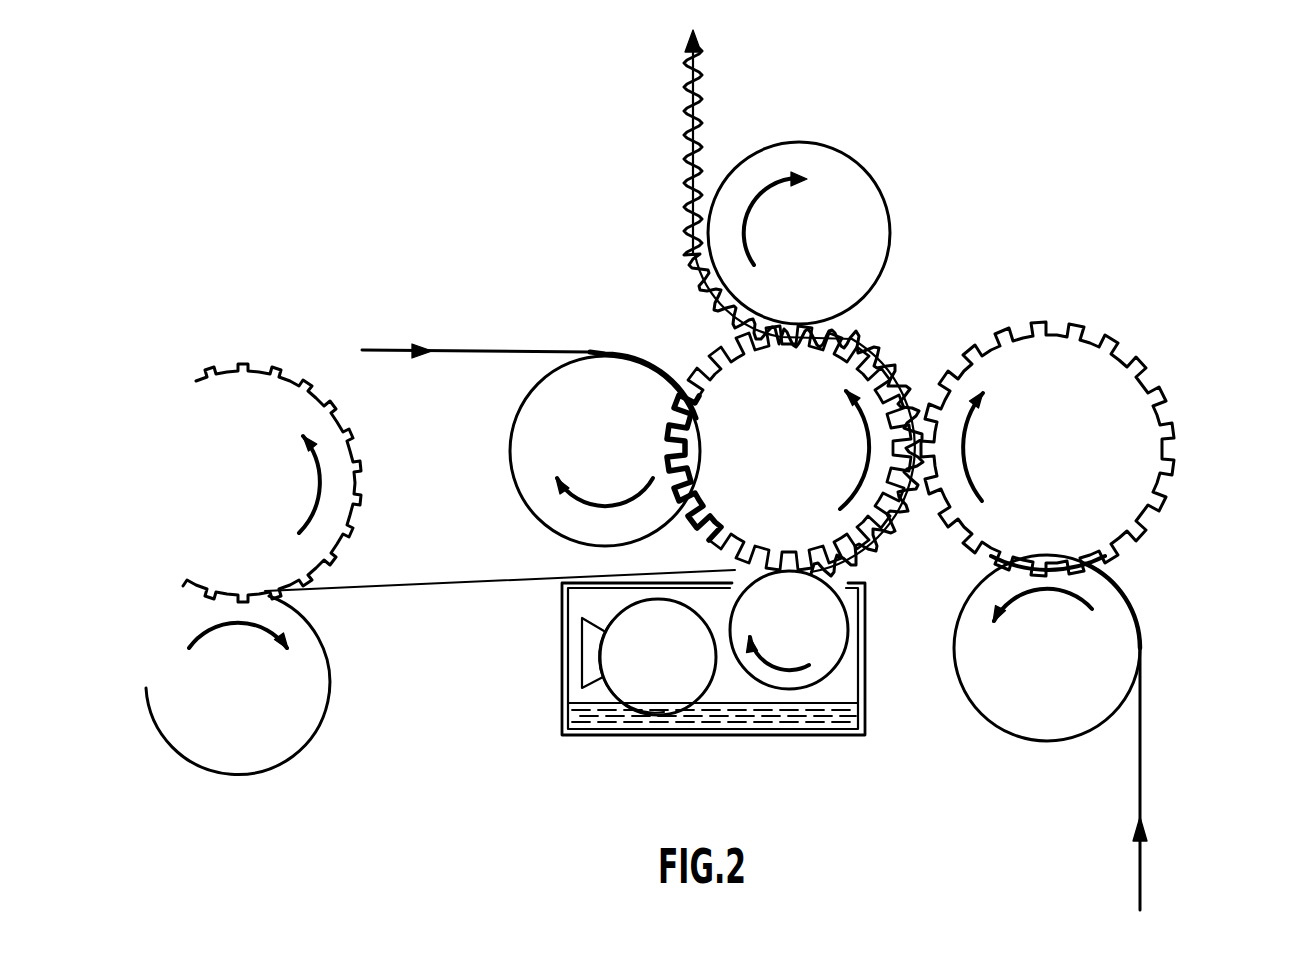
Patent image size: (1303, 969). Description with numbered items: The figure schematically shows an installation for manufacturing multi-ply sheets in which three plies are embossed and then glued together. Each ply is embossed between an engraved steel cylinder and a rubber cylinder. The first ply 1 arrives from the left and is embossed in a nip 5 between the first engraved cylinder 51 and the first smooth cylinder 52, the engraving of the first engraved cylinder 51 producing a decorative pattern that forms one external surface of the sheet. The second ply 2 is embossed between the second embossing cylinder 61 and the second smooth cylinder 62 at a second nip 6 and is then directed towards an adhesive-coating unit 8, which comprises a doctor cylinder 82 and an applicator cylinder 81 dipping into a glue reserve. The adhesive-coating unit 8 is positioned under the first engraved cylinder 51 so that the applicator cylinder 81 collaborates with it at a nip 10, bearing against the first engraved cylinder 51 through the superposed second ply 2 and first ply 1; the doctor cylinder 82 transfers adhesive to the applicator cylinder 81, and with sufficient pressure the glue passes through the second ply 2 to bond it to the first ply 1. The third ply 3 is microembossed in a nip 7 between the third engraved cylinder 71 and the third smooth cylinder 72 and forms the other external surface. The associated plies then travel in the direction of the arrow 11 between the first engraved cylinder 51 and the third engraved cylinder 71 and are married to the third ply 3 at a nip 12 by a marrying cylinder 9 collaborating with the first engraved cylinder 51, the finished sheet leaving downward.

The first ply 1 is at (467, 355).
The second ply 2 is at (447, 583).
The third ply 3 is at (1130, 870).
The nip 5 is at (690, 377).
The second nip 6 is at (312, 602).
The nip 7 is at (1120, 567).
The adhesive-coating unit 8 is at (677, 742).
The marrying cylinder 9 is at (888, 220).
The nip 10 is at (840, 565).
The arrow 11 is at (919, 386).
The nip 12 is at (862, 317).
The first engraved cylinder 51 is at (771, 444).
The first smooth cylinder 52 is at (587, 446).
The second embossing cylinder 61 is at (223, 488).
The second smooth cylinder 62 is at (221, 688).
The third engraved cylinder 71 is at (1031, 434).
The third smooth cylinder 72 is at (1028, 653).
The applicator cylinder 81 is at (768, 629).
The doctor cylinder 82 is at (638, 658).